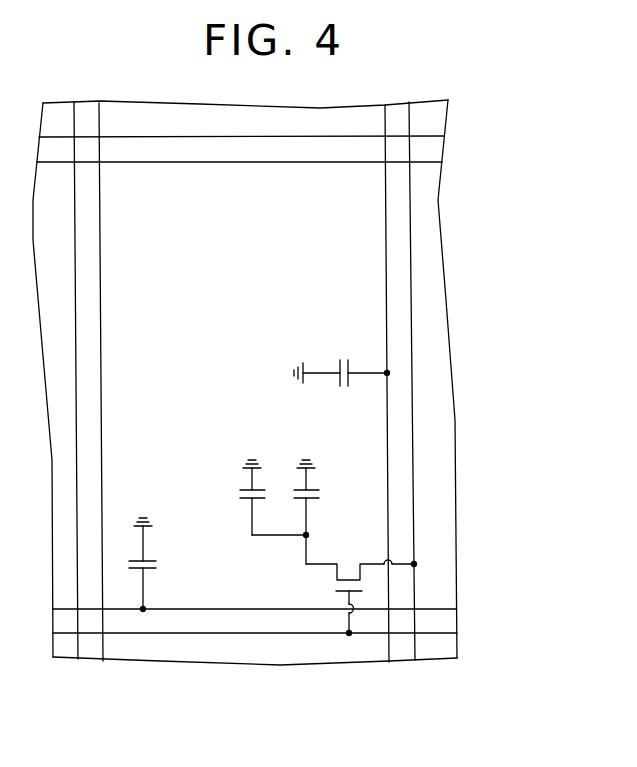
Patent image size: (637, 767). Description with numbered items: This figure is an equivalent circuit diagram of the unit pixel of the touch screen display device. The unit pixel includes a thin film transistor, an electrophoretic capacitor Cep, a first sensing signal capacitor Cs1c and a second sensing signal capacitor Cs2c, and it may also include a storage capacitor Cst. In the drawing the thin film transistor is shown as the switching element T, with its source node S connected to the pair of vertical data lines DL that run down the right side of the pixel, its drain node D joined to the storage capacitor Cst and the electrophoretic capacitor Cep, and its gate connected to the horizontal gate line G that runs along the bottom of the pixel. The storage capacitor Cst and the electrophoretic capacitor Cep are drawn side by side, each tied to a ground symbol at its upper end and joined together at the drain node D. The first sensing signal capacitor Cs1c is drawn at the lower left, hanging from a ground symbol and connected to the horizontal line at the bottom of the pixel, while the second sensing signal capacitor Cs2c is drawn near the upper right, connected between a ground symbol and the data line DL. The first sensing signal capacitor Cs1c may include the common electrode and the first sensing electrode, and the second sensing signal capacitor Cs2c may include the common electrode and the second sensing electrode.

The second sensing signal capacitor Cs2c is at (342, 360).
The data line DL is at (412, 377).
The storage capacitor Cst is at (256, 497).
The electrophoretic capacitor Cep is at (325, 497).
The first sensing signal capacitor Cs1c is at (162, 565).
The drain electrode D is at (316, 544).
The source electrode S is at (424, 566).
The switching transistor T is at (360, 596).
The gate line G is at (349, 633).